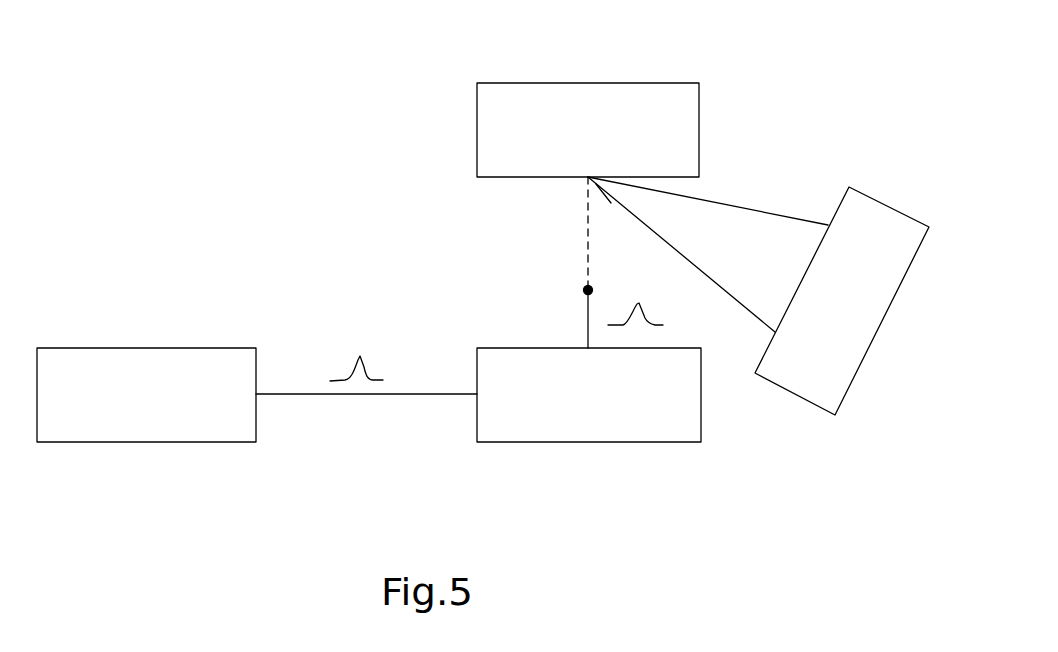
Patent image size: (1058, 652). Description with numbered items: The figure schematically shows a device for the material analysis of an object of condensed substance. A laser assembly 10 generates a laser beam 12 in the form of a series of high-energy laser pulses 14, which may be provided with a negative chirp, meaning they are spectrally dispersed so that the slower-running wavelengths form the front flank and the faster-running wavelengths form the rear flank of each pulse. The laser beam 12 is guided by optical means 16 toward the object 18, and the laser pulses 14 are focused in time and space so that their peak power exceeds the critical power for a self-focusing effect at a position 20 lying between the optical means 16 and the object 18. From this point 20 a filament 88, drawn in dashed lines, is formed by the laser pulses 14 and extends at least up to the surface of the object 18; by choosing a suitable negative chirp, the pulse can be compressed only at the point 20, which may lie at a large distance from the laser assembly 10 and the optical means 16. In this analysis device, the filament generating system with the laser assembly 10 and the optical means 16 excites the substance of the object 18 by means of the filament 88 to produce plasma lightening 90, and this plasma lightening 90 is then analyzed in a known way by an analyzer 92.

The laser assembly 10 is at (97, 370).
The laser beam 12 is at (343, 395).
The laser pulses 14 is at (365, 368).
The optical means 16 is at (572, 417).
The object 18 is at (612, 113).
The position 20 is at (584, 290).
The filament 88 is at (587, 240).
The plasma lightening 90 is at (605, 186).
The analyzer 92 is at (885, 227).